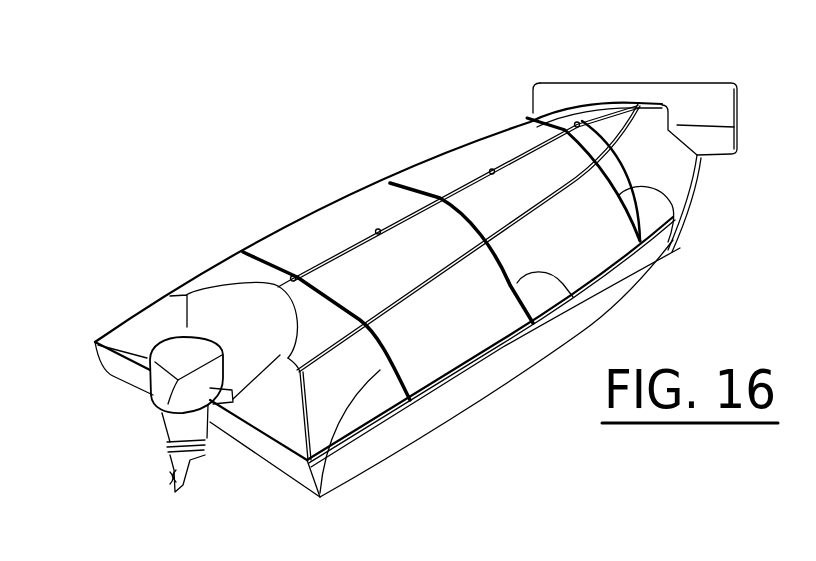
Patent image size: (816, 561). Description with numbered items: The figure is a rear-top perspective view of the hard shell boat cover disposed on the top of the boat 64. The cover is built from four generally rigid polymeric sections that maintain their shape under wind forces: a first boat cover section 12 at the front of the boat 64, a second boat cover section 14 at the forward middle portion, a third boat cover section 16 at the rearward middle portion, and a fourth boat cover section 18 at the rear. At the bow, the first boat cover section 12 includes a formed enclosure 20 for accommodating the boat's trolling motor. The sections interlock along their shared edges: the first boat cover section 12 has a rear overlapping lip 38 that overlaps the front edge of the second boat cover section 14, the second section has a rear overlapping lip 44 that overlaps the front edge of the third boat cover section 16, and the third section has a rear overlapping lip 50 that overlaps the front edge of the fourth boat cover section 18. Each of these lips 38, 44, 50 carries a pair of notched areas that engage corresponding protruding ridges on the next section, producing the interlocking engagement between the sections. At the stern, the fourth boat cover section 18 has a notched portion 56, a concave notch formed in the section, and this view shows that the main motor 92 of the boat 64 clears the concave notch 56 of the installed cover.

The first boat cover section 12 is at (643, 143).
The second boat cover section 14 is at (459, 160).
The third boat cover section 16 is at (327, 230).
The fourth boat cover section 18 is at (150, 322).
The formed enclosure 20 is at (717, 98).
The rear overlapping lip 38 is at (677, 212).
The rear overlapping lip 44 is at (567, 283).
The rear overlapping lip 50 is at (317, 487).
The notched portion 56 is at (222, 307).
The boat 64 is at (440, 407).
The main motor 92 is at (187, 395).